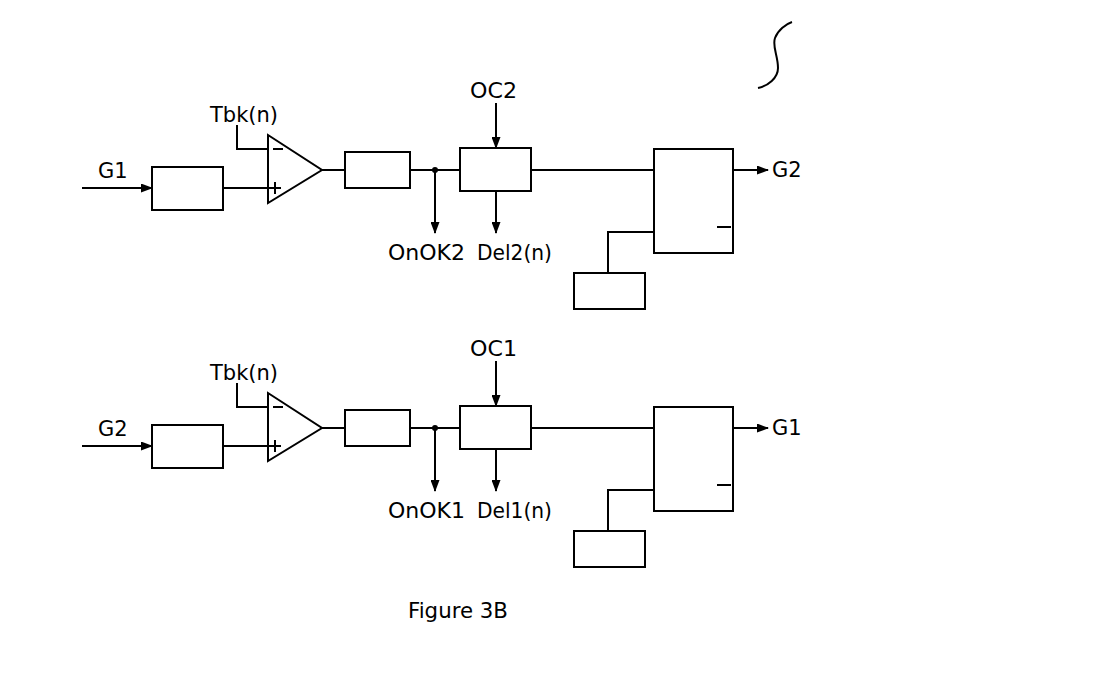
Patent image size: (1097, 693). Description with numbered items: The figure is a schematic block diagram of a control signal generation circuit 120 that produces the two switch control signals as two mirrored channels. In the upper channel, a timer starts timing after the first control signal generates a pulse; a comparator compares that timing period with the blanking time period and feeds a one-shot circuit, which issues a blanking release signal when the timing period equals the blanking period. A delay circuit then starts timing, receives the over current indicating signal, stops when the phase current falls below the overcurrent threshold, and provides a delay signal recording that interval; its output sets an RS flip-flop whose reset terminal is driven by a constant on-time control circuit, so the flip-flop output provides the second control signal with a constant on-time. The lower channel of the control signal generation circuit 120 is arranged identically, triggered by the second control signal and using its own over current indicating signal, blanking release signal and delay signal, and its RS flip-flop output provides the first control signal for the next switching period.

The control signal generation circuit 120 is at (794, 47).